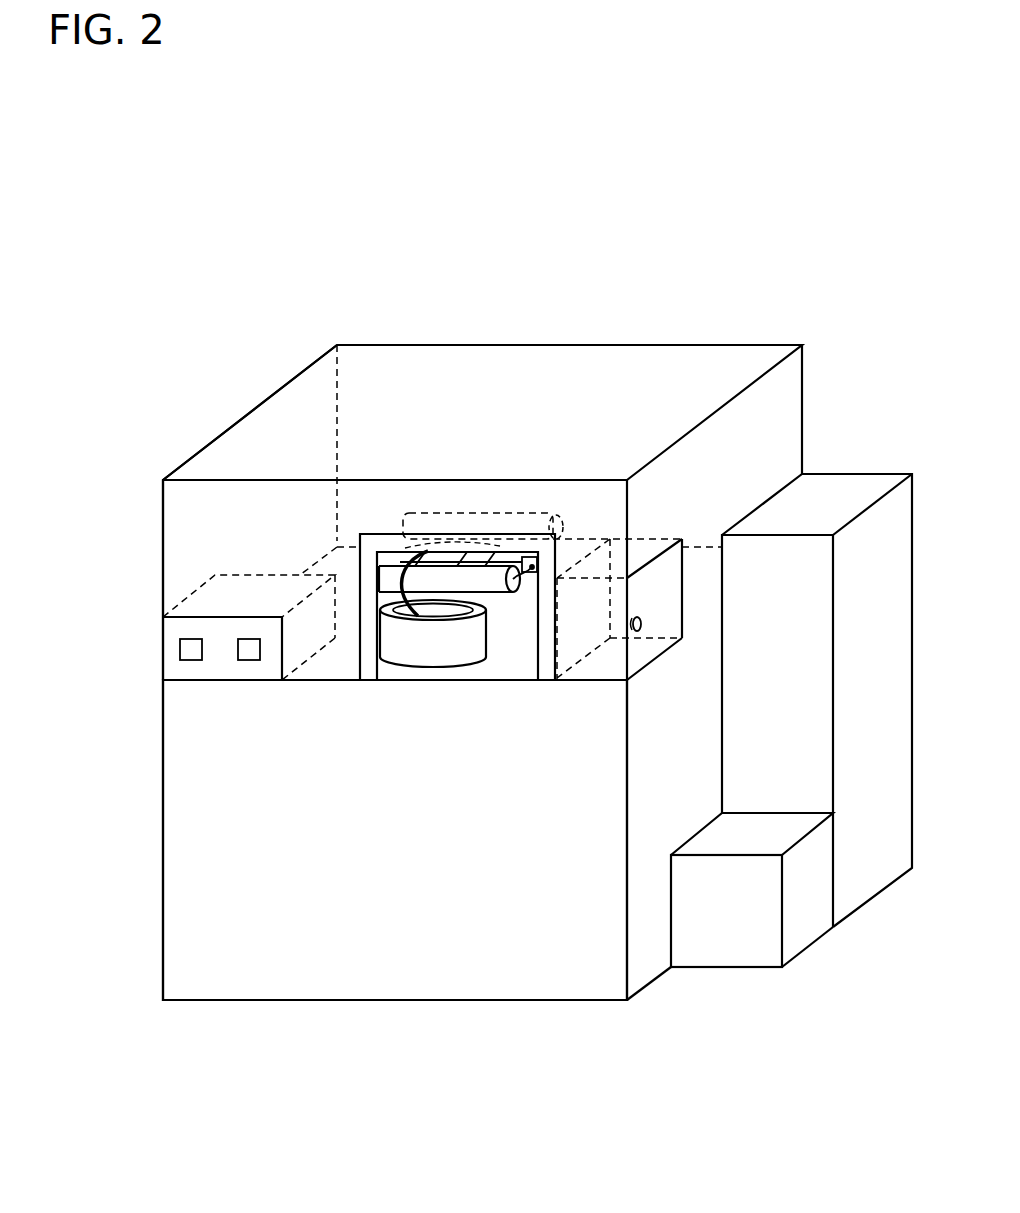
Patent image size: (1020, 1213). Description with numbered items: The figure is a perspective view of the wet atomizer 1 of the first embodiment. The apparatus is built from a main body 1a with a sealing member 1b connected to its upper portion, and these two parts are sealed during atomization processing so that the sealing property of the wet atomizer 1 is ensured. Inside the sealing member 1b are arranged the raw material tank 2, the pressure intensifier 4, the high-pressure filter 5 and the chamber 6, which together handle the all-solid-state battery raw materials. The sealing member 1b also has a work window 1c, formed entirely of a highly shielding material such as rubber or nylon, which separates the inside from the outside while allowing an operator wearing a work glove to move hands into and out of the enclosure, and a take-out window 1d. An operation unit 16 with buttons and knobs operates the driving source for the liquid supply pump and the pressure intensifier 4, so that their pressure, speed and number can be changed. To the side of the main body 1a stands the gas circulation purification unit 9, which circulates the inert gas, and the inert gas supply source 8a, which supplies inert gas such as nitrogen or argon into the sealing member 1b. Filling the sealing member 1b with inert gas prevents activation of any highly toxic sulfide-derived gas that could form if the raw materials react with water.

The wet atomizer 1 is at (910, 1073).
The main body 1a is at (183, 870).
The sealing member 1b is at (183, 548).
The work window 1c is at (545, 655).
The take-out window 1d is at (658, 613).
The raw material tank 2 is at (417, 653).
The pressure intensifier 4 is at (438, 517).
The high-pressure filter 5 is at (573, 547).
The chamber 6 is at (478, 547).
The inert gas supply source 8a is at (733, 918).
The gas circulation purification unit 9 is at (875, 678).
The operation unit 16 is at (183, 631).